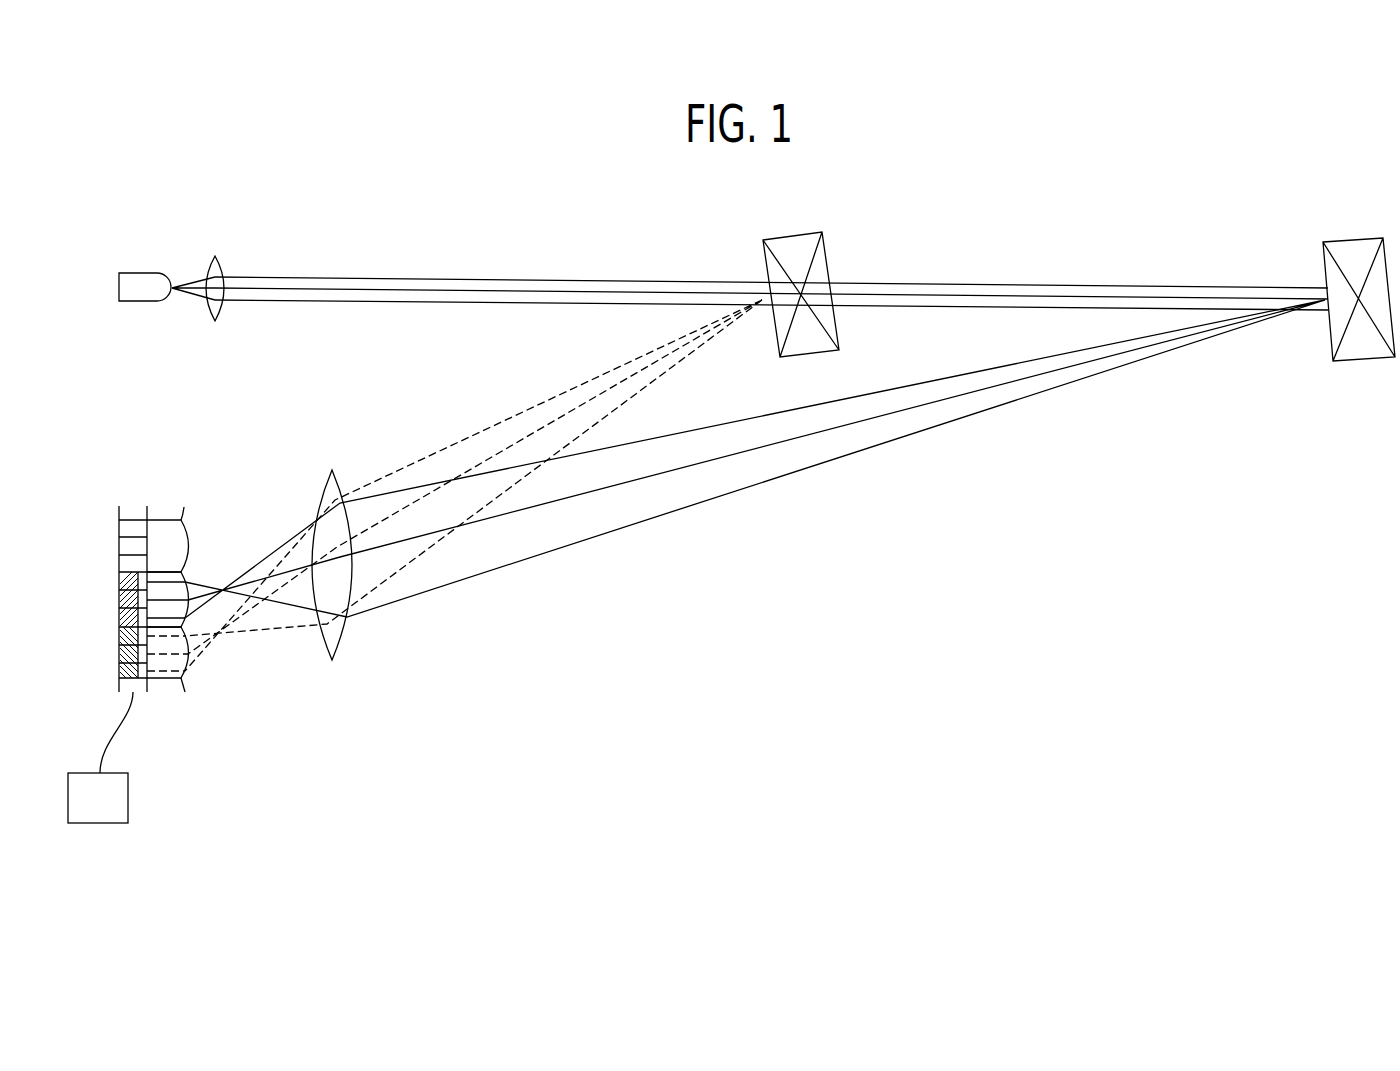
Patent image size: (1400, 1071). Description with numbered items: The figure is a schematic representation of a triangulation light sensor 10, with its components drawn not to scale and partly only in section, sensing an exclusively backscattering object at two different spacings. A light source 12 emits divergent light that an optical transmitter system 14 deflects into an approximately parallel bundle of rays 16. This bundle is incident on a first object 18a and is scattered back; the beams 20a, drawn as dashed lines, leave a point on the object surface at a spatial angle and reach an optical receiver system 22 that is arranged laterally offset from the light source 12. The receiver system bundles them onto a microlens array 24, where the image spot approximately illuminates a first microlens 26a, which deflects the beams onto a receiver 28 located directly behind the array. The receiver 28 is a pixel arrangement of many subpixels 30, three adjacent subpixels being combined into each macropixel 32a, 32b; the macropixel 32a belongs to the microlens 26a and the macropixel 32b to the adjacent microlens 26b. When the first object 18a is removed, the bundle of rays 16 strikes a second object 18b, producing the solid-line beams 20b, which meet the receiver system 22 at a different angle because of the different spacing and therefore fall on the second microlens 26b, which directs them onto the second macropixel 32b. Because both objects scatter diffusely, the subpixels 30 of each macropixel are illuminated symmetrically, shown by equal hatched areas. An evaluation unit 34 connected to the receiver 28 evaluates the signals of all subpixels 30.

The triangulation light sensor 10 is at (208, 721).
The light source 12 is at (145, 282).
The optical transmitter system 14 is at (215, 268).
The bundle of rays 16 is at (415, 285).
The first object 18a is at (815, 275).
The second object 18b is at (1333, 276).
The beams scattered back from first object 20a is at (530, 408).
The beams scattered back from second object 20b is at (788, 415).
The optical receiver system 22 is at (332, 632).
The microlens array 24 is at (209, 565).
The first microlens 26a is at (170, 663).
The second microlens 26b is at (180, 593).
The receiver 28 is at (97, 595).
The subpixels 30 is at (128, 530).
The first macropixel 32a is at (110, 627).
The second macropixel 32b is at (110, 572).
The evaluation unit 34 is at (98, 798).